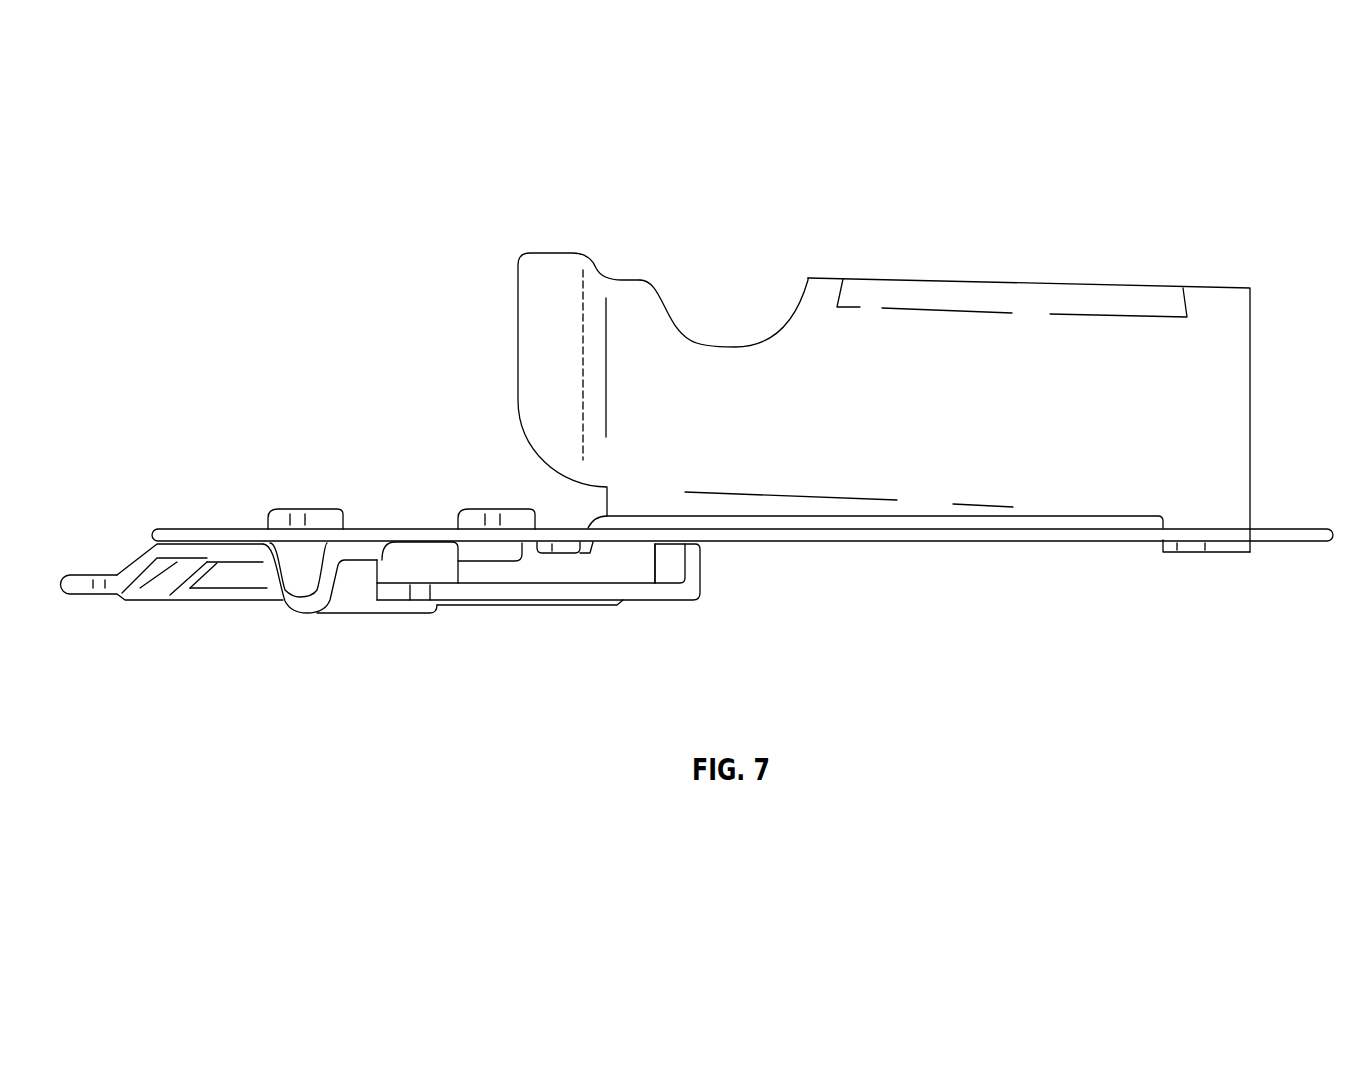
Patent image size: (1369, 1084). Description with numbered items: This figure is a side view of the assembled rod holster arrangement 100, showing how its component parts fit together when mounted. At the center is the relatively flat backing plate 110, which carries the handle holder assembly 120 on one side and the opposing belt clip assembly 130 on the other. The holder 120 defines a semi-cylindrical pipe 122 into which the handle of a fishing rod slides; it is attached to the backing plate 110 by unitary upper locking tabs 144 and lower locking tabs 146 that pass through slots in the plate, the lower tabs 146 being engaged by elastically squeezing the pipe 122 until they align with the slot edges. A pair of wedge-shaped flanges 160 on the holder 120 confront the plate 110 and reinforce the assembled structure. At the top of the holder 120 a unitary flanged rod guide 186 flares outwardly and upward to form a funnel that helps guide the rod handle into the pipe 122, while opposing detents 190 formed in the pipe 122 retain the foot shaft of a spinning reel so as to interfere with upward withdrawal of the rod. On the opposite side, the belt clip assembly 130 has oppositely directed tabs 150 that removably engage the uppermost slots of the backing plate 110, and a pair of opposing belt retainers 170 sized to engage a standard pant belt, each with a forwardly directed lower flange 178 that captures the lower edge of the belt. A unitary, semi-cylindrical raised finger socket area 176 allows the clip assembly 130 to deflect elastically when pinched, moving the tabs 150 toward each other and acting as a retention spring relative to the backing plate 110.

The rod holster arrangement 100 is at (411, 449).
The backing plate 110 is at (887, 530).
The handle holder assembly 120 is at (1214, 391).
The semi-cylindrical pipe 122 is at (895, 338).
The belt clip assembly 130 is at (673, 600).
The upper locking tabs 144 is at (558, 556).
The lower locking tabs 146 is at (1190, 550).
The tabs 150 is at (292, 514).
The wedge-shaped flanges 160 is at (660, 523).
The belt retainers 170 is at (75, 587).
The raised finger socket area 176 is at (337, 604).
The lower flange 178 is at (677, 568).
The flanged rod guide 186 is at (532, 327).
The detents 190 is at (740, 345).